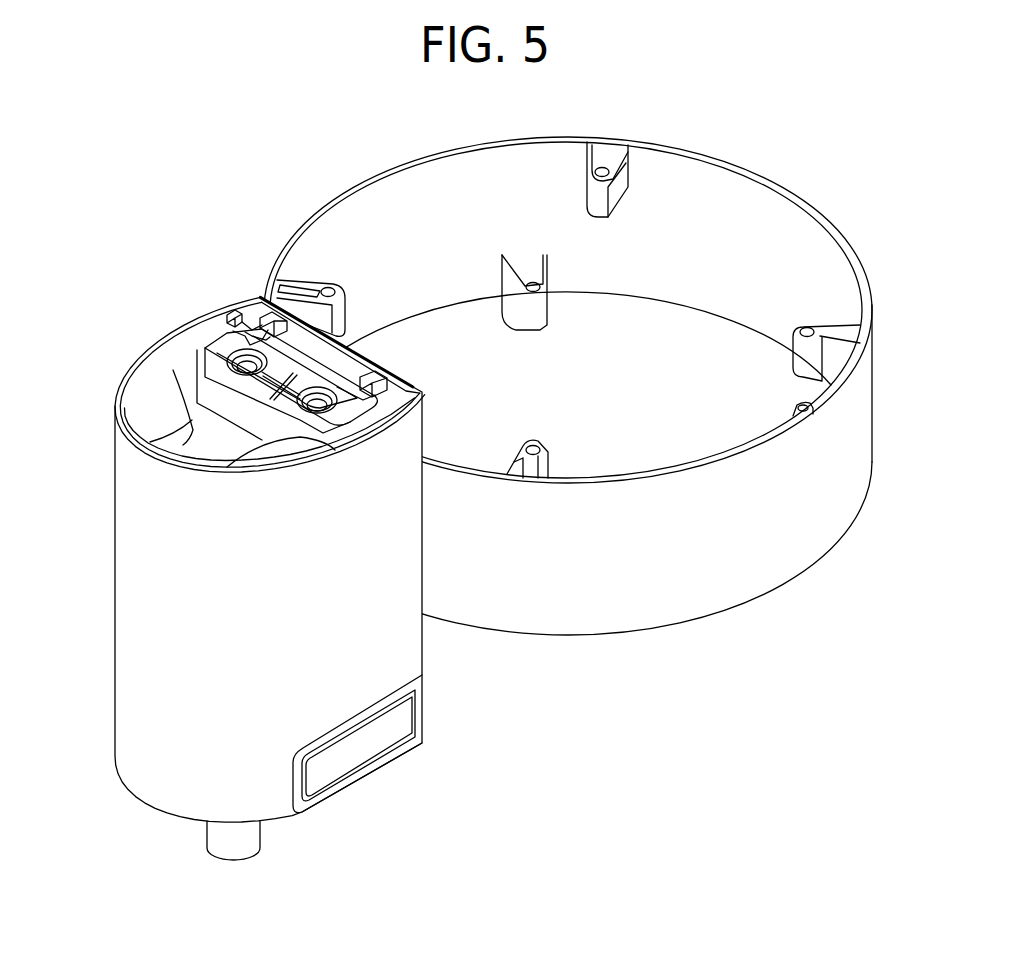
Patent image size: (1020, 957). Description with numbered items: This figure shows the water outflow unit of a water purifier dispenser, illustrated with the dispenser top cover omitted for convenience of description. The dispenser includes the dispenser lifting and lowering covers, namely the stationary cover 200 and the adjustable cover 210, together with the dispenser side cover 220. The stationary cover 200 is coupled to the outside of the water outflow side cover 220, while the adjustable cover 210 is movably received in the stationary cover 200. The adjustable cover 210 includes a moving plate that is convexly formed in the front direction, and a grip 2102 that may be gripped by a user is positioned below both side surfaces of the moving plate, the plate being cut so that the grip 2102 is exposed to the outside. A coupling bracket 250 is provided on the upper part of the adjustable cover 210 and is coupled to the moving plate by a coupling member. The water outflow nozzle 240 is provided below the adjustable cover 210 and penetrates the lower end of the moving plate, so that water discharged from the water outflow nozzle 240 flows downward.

The stationary cover 200 is at (130, 523).
The adjustable cover 210 is at (193, 437).
The dispenser side cover 220 is at (638, 600).
The water outflow nozzle 240 is at (228, 848).
The coupling bracket 250 is at (247, 328).
The grip 2102 is at (360, 748).